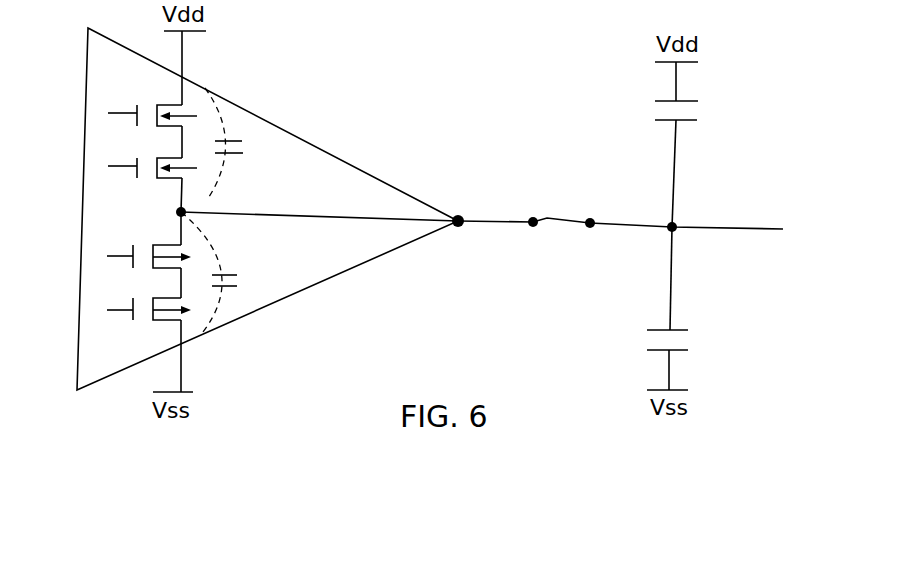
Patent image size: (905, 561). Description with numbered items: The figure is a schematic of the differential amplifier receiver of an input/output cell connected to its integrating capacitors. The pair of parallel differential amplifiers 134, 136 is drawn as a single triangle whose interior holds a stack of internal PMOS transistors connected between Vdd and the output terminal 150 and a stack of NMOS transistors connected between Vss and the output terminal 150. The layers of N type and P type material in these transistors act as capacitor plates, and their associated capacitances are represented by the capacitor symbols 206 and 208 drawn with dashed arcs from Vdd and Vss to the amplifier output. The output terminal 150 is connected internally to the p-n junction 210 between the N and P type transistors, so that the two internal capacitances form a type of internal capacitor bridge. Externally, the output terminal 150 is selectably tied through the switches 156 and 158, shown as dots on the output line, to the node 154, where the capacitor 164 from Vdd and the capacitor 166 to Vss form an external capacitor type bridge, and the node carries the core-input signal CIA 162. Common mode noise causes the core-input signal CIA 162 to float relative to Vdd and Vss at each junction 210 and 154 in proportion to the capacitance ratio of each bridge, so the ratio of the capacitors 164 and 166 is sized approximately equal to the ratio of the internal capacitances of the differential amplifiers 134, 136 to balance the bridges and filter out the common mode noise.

The differential amplifier 134 is at (267, 209).
The differential amplifier 136 is at (350, 110).
The output terminal 150 is at (455, 215).
The node 154 is at (675, 220).
The switch 156 is at (557, 203).
The switch 158 is at (558, 207).
The core-input signal CIA 162 is at (822, 220).
The capacitor 164 is at (686, 102).
The capacitor 166 is at (676, 330).
The capacitor symbol 206 is at (243, 153).
The capacitor symbol 208 is at (237, 274).
The p-n junction 210 is at (176, 210).